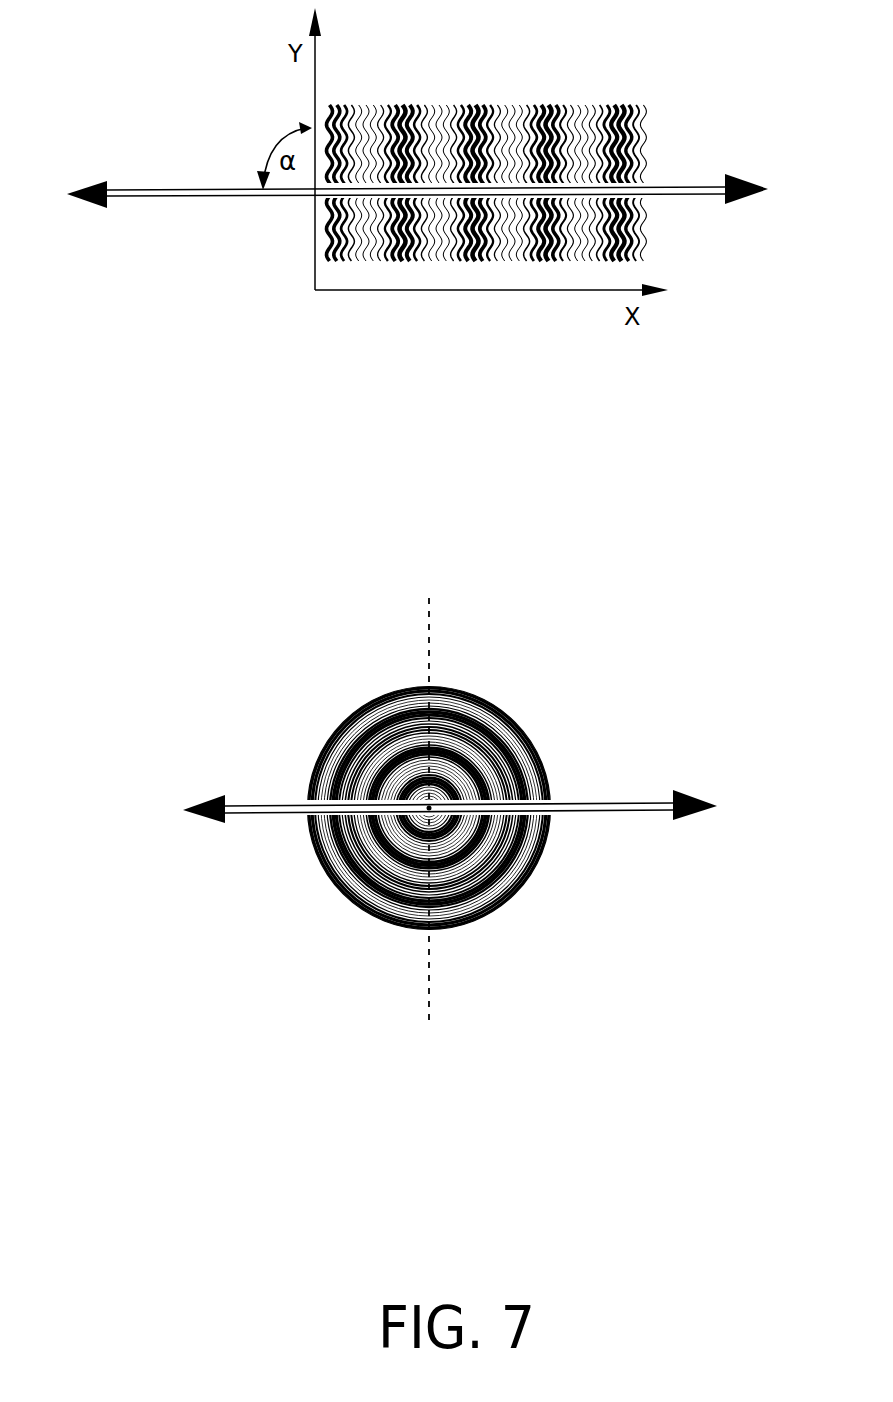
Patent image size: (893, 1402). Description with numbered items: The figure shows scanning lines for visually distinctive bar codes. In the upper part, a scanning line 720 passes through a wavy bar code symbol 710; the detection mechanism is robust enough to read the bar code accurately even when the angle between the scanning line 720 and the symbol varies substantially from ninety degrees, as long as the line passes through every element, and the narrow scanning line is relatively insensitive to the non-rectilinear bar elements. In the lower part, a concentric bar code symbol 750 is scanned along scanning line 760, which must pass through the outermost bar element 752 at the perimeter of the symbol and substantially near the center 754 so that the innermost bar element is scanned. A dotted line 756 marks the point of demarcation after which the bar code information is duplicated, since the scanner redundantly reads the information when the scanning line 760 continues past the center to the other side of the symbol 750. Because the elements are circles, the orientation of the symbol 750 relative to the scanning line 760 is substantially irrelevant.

The wavy bar code symbol 710 is at (397, 78).
The scanning line 720 is at (687, 163).
The concentric bar code symbol 750 is at (308, 598).
The outermost bar element 752 is at (541, 758).
The center 754 is at (441, 796).
The dotted line 756 is at (436, 598).
The scanning line 760 is at (617, 798).